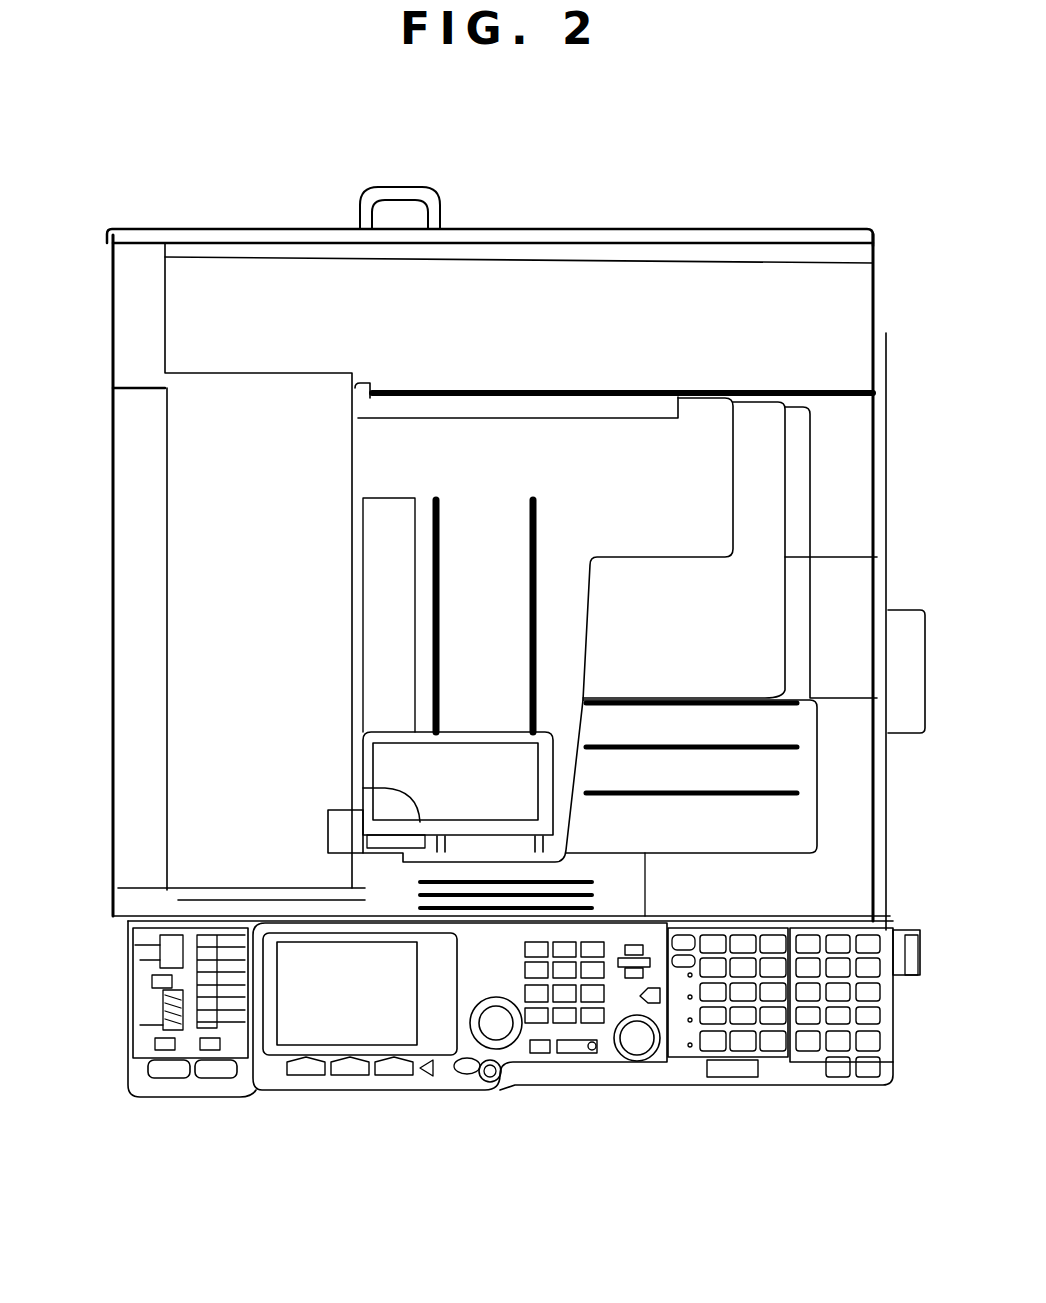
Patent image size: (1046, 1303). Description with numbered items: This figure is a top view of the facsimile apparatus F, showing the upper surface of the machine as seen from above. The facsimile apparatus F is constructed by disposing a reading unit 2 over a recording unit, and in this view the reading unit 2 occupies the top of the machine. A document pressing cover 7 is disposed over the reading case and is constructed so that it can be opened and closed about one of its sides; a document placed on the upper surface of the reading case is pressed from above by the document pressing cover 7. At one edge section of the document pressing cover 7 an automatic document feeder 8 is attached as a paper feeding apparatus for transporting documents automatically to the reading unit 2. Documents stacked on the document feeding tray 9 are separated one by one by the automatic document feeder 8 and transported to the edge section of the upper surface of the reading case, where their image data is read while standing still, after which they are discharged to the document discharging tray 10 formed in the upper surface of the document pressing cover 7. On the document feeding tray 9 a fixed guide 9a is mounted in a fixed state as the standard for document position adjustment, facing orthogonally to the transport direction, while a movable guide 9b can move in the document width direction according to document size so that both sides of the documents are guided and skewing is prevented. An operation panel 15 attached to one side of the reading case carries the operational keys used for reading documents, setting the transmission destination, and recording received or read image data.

The facsimile apparatus F is at (203, 205).
The document pressing cover 7 is at (658, 228).
The reading unit 2 is at (906, 322).
The automatic document feeder (ADF) 8 is at (112, 630).
The document feeding tray 9 is at (606, 505).
The fixed guide 9a is at (526, 415).
The movable guide 9b is at (360, 789).
The document discharging tray 10 is at (764, 818).
The operation panel 15 is at (250, 1093).